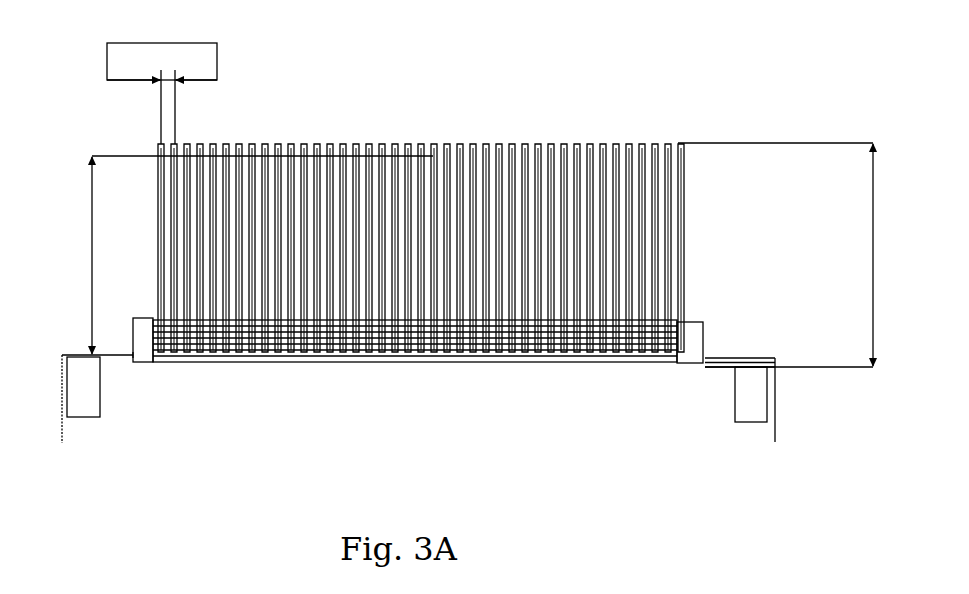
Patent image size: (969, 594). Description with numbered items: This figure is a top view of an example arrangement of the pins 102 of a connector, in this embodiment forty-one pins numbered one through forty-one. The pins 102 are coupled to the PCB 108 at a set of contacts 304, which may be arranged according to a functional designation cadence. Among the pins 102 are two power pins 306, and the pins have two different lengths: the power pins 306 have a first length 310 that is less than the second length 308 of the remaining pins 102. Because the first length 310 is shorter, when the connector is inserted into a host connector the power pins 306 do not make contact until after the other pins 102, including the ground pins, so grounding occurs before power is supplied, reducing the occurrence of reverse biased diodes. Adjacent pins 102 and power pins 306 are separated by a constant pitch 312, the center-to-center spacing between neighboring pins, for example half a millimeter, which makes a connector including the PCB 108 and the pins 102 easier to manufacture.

The pins 102 is at (472, 145).
The PCB 108 is at (185, 450).
The contacts 304 is at (681, 366).
The power pins 306 is at (409, 363).
The second length 308 is at (873, 268).
The first length 310 is at (92, 222).
The pitch 312 is at (166, 43).